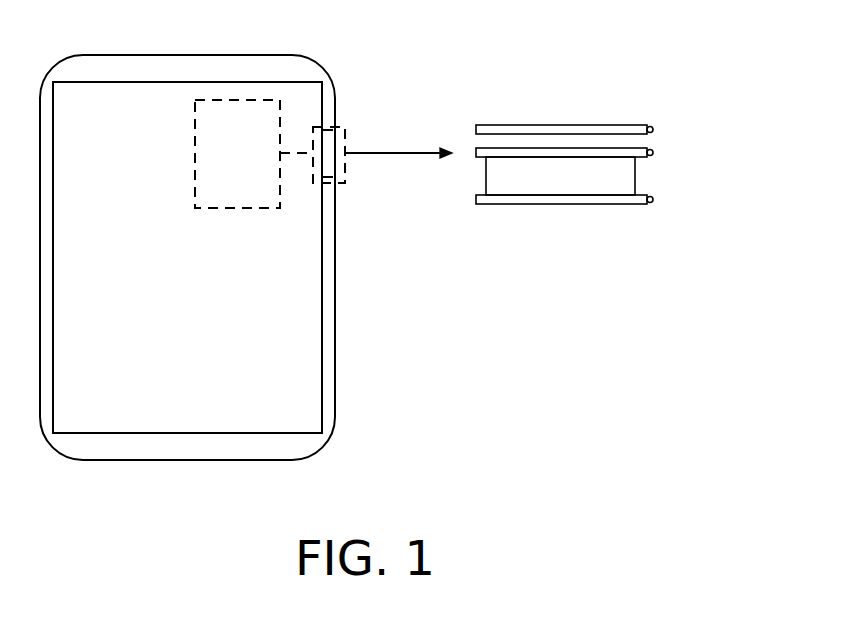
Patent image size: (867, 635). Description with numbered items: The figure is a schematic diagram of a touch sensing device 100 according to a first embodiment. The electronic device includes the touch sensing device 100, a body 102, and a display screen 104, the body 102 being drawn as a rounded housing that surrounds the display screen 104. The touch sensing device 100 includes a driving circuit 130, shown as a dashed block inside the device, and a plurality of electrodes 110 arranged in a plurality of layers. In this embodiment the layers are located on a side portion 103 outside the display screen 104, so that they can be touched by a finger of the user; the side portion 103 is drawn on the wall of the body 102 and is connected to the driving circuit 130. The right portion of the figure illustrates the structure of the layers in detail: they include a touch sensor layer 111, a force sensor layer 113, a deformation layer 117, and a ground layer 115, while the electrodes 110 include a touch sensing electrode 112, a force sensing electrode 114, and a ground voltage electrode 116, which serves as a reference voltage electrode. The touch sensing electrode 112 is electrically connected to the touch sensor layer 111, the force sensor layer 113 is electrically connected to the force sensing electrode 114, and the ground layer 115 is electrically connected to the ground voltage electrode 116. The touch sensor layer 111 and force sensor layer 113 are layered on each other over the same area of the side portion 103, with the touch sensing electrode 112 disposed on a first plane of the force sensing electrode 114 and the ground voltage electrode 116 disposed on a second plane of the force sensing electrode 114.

The touch sensing device 100 is at (643, 485).
The body 102 is at (233, 53).
The side portion 103 is at (347, 135).
The display screen 104 is at (323, 318).
The electrodes 110 is at (626, 162).
The touch sensor layer 111 is at (597, 128).
The touch sensing electrode 112 is at (654, 128).
The force sensor layer 113 is at (528, 152).
The force sensing electrode 114 is at (654, 152).
The ground layer 115 is at (597, 202).
The ground voltage electrode 116 is at (684, 206).
The deformation layer 117 is at (537, 185).
The driving circuit 130 is at (195, 155).